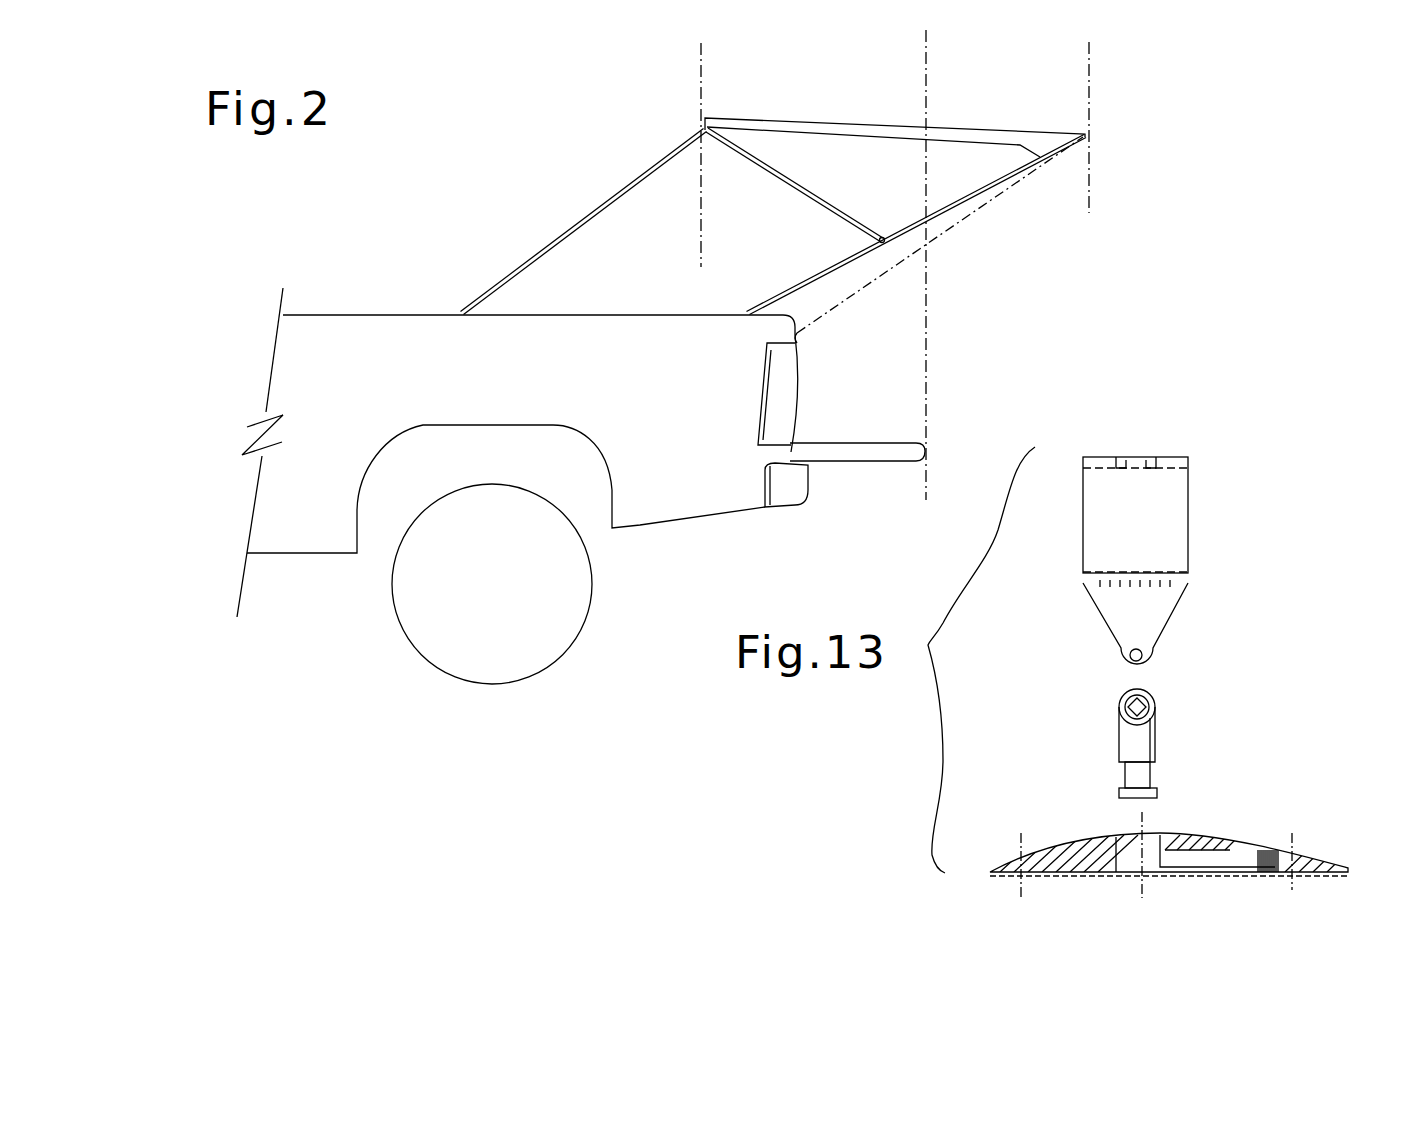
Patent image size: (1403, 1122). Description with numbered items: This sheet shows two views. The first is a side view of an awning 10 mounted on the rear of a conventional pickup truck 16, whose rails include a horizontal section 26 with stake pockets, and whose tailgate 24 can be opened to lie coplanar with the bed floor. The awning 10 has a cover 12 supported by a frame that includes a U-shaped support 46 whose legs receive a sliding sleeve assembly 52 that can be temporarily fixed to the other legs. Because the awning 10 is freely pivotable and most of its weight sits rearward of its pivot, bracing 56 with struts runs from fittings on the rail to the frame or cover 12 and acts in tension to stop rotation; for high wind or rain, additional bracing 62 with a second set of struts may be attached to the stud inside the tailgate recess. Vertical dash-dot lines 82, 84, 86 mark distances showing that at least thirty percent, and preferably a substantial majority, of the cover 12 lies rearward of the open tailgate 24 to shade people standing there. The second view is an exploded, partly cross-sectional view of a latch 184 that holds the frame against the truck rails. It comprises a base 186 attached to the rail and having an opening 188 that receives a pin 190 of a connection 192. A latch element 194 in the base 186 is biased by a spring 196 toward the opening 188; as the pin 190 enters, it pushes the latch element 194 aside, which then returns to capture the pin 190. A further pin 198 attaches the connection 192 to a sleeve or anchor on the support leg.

In FIG. 2, the awning 10 is at (953, 98).
In FIG. 2, the cover 12 is at (983, 118).
In FIG. 2, the truck 16 is at (366, 272).
In FIG. 2, the tailgate 24 is at (911, 440).
In FIG. 2, the horizontal section 26 is at (352, 314).
In FIG. 2, the U-shaped support 46 is at (812, 203).
In FIG. 2, the sliding sleeve assembly 52 is at (884, 236).
In FIG. 2, the bracing 56 is at (606, 178).
In FIG. 2, the additional bracing 62 is at (985, 225).
In FIG. 2, the vertical dash-dot line 82 is at (701, 72).
In FIG. 2, the vertical dash-dot line 84 is at (926, 40).
In FIG. 2, the vertical dash-dot line 86 is at (1089, 44).
In FIG. 13, the latch 184 is at (1185, 723).
In FIG. 13, the base 186 is at (1063, 845).
In FIG. 13, the opening 188 is at (1123, 872).
In FIG. 13, the pin 190 is at (1148, 778).
In FIG. 13, the connection 192 is at (1117, 722).
In FIG. 13, the latch element 194 is at (1240, 875).
In FIG. 13, the spring 196 is at (1262, 850).
In FIG. 13, the pin 198 is at (1180, 532).